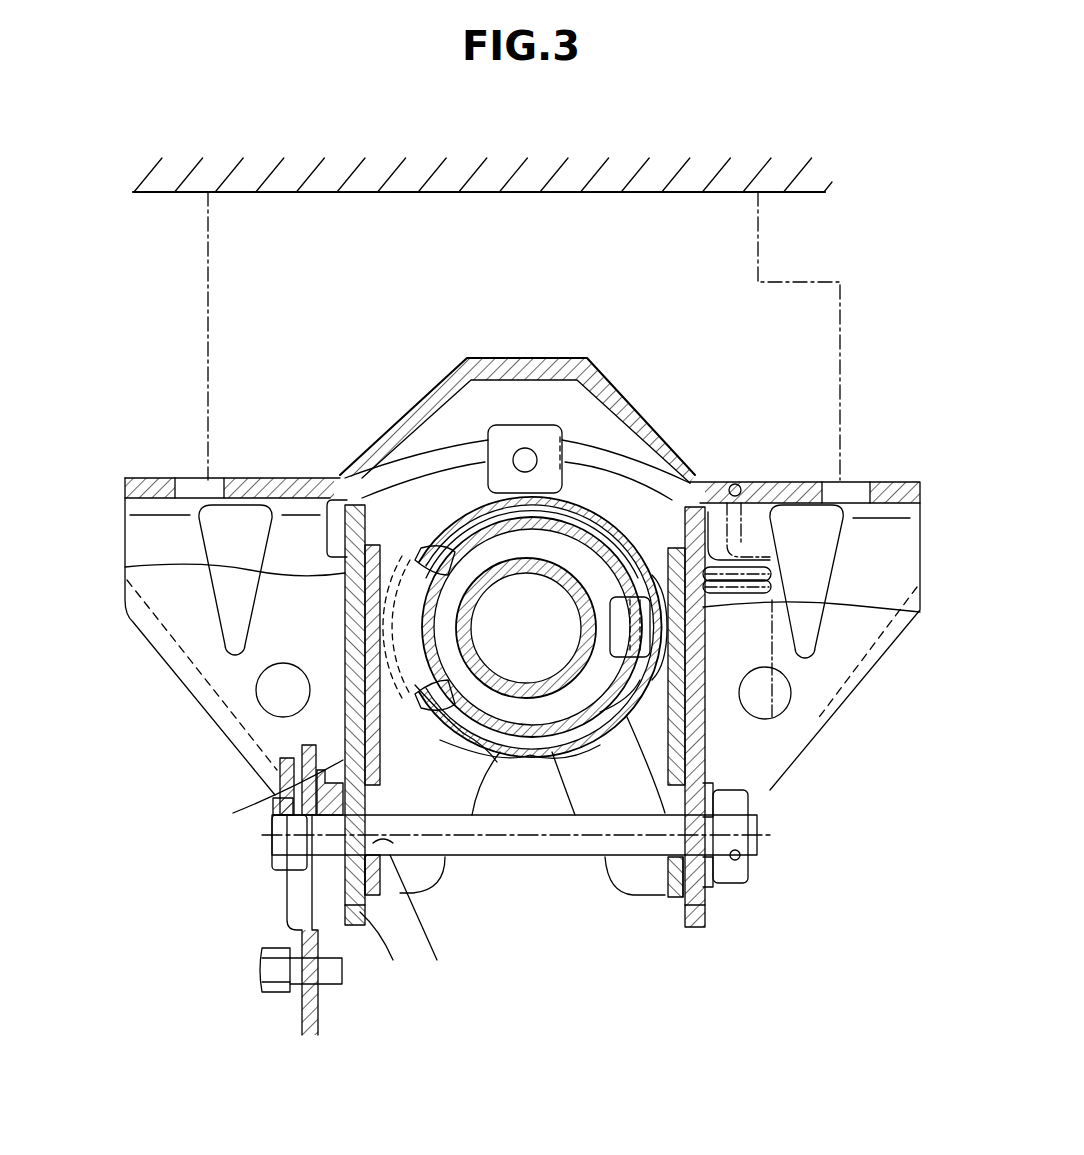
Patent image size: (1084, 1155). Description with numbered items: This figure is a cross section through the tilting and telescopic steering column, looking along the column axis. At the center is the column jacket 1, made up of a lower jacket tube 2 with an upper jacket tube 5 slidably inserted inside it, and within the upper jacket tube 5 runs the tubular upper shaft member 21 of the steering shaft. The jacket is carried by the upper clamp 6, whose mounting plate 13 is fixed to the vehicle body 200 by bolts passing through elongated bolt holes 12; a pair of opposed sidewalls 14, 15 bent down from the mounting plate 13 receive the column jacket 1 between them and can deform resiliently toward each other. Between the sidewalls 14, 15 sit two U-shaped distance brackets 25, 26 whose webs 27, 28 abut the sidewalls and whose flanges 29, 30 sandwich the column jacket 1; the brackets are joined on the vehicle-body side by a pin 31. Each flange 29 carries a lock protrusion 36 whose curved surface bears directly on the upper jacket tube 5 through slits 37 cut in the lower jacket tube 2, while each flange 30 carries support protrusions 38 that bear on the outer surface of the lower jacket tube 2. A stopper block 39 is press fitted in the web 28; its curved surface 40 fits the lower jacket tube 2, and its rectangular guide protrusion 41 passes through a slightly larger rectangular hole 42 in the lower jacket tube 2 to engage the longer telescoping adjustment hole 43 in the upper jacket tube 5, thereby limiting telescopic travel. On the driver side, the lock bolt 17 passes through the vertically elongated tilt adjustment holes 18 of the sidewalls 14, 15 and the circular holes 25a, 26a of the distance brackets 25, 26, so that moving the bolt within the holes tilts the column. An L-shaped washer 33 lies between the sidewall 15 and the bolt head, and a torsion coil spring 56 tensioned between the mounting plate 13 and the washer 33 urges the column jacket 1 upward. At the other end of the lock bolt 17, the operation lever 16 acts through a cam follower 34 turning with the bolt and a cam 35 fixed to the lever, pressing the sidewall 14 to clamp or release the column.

The column jacket 1 is at (533, 757).
The lower jacket tube 2 is at (458, 737).
The upper jacket tube 5 is at (510, 754).
The upper clamp 6 is at (568, 358).
The elongated bolt holes 12 is at (205, 478).
The mounting plate 13 is at (885, 540).
The sidewall 14 is at (345, 573).
The sidewall 15 is at (703, 612).
The operation lever 16 is at (295, 900).
The lock bolt 17 is at (642, 850).
The tilt adjustment holes 18 is at (365, 895).
The upper shaft member 21 is at (435, 560).
The distance bracket 25 is at (460, 470).
The circular hole 25a is at (375, 845).
The distance bracket 26 is at (690, 500).
The circular hole 26a is at (672, 850).
The web 27 is at (345, 597).
The web 28 is at (600, 710).
The flanges 29 is at (300, 790).
The flanges 30 is at (613, 787).
The pin 31 is at (535, 452).
The washer 33 is at (712, 888).
The cam follower 34 is at (278, 862).
The cam 35 is at (272, 835).
The lock protrusions 36 is at (345, 670).
The slits 37 is at (343, 733).
The support protrusions 38 is at (620, 525).
The stopper block 39 is at (705, 505).
The curved surface 40 is at (703, 650).
The guide protrusion 41 is at (645, 550).
The rectangular hole 42 is at (703, 620).
The telescoping adjustment hole 43 is at (582, 634).
The torsion coil spring 56 is at (760, 565).
The vehicle body 200 is at (800, 196).